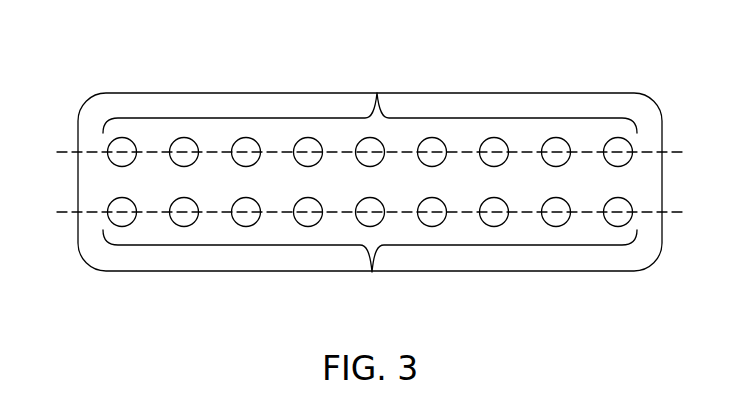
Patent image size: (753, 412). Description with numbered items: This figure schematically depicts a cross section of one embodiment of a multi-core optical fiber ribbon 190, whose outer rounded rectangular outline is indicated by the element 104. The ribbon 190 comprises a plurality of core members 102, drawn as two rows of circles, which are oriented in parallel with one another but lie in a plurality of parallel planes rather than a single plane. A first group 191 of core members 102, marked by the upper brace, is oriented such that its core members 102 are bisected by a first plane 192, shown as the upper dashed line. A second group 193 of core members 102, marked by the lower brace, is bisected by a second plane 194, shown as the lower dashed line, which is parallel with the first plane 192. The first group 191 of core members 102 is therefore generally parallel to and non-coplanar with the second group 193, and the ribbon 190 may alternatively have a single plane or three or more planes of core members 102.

The multi-core optical fiber ribbon 190 is at (375, 165).
The housing / plate 104 is at (661, 101).
The first group 191 is at (377, 93).
The second group 193 is at (372, 272).
The first plane 192 is at (57, 152).
The second plane 194 is at (57, 212).
The core members 102 is at (133, 161).